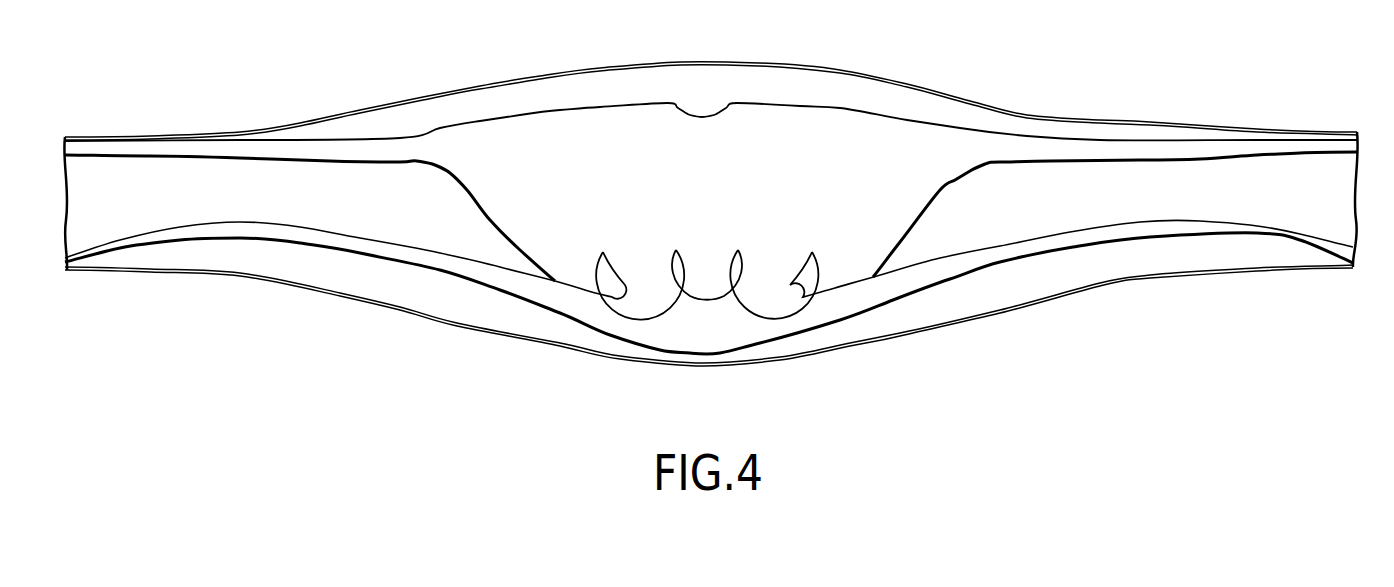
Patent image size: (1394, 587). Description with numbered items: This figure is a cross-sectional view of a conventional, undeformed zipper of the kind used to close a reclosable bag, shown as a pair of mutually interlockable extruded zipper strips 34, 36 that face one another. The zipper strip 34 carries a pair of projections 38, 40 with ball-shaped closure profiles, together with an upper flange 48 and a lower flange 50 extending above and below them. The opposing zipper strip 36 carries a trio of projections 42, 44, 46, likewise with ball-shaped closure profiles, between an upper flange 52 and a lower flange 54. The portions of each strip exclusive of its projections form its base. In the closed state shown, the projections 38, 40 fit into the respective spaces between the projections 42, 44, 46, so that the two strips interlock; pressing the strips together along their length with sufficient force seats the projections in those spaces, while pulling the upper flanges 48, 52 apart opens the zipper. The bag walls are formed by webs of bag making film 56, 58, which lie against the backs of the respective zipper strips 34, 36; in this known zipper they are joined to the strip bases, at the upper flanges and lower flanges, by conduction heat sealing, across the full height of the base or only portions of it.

The zipper strip 34 is at (760, 343).
The zipper strip 36 is at (875, 132).
The projection 38 is at (777, 212).
The projection 40 is at (628, 197).
The projection 42 is at (840, 272).
The projection 44 is at (688, 287).
The projection 46 is at (567, 272).
The upper flange 48 is at (1098, 242).
The lower flange 50 is at (455, 278).
The upper flange 52 is at (1127, 148).
The lower flange 54 is at (398, 138).
The web of bag making film 56 is at (677, 62).
The web of bag making film 58 is at (897, 343).